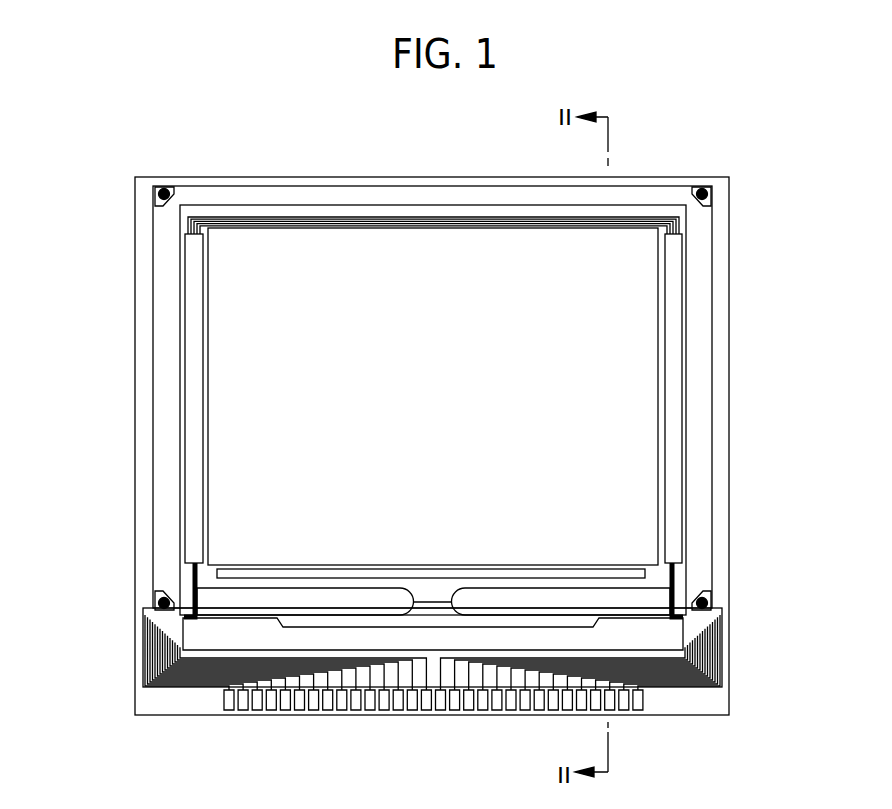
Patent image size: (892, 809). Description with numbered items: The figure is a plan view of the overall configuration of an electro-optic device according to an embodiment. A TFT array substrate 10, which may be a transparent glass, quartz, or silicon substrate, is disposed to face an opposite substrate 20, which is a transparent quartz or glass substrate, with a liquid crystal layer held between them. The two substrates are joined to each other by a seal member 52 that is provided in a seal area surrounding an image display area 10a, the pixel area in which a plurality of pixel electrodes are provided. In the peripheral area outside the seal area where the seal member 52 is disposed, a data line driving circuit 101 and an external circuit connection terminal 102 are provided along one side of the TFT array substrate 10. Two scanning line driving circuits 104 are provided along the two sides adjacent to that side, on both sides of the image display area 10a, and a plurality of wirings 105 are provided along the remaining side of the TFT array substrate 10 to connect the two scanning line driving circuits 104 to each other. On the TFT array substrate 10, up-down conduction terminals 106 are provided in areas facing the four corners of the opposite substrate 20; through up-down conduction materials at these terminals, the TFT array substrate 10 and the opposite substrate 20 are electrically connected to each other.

The TFT array substrate 10 is at (258, 183).
The image display area 10a is at (250, 352).
The opposite substrate 20 is at (455, 187).
The seal member 52 is at (702, 332).
The data line driving circuit 101 is at (207, 645).
The external circuit connection terminal 102 is at (398, 690).
The scanning line driving circuit 104 is at (673, 398).
The wirings 105 is at (358, 218).
The up-down conduction terminal 106 is at (176, 193).